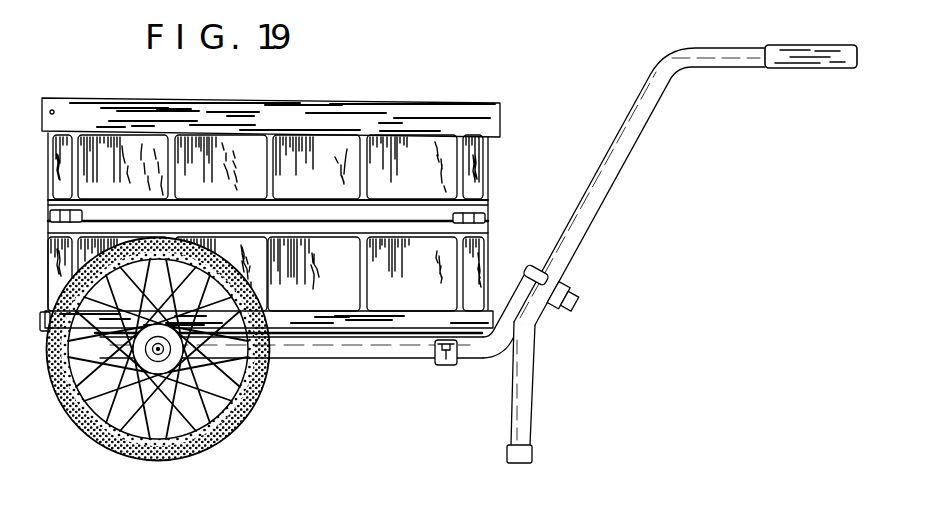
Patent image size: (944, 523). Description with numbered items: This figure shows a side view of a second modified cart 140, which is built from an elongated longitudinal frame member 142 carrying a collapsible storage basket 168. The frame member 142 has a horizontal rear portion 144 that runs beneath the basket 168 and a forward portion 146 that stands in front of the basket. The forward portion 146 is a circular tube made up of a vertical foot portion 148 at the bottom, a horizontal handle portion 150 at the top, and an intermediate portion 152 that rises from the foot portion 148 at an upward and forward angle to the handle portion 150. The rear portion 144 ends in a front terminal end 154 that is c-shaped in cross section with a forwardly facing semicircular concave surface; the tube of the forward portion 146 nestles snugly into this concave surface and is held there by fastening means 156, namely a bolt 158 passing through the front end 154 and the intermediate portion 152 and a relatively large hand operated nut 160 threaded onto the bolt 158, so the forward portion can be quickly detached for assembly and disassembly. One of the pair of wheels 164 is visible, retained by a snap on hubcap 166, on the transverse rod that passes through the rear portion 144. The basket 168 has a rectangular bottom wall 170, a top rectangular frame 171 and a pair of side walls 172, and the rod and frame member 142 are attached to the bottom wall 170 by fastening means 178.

The second modified cart 140 is at (443, 63).
The elongated longitudinal frame member 142 is at (352, 363).
The horizontal rear portion 144 is at (403, 353).
The forward portion 146 is at (618, 258).
The vertical foot portion 148 is at (520, 432).
The horizontal handle portion 150 is at (740, 53).
The intermediate portion 152 is at (584, 233).
The front terminal end 154 is at (521, 303).
The fastening means 156 is at (623, 285).
The bolt 158 is at (534, 270).
The hand operated nut 160 is at (555, 313).
The wheels 164 is at (162, 450).
The snap on hubcaps 166 is at (150, 353).
The collapsible storage basket 168 is at (113, 93).
The rectangular bottom wall 170 is at (42, 330).
The top rectangular frame 171 is at (467, 115).
The side walls 172 is at (480, 175).
The fastening means 178 is at (453, 372).